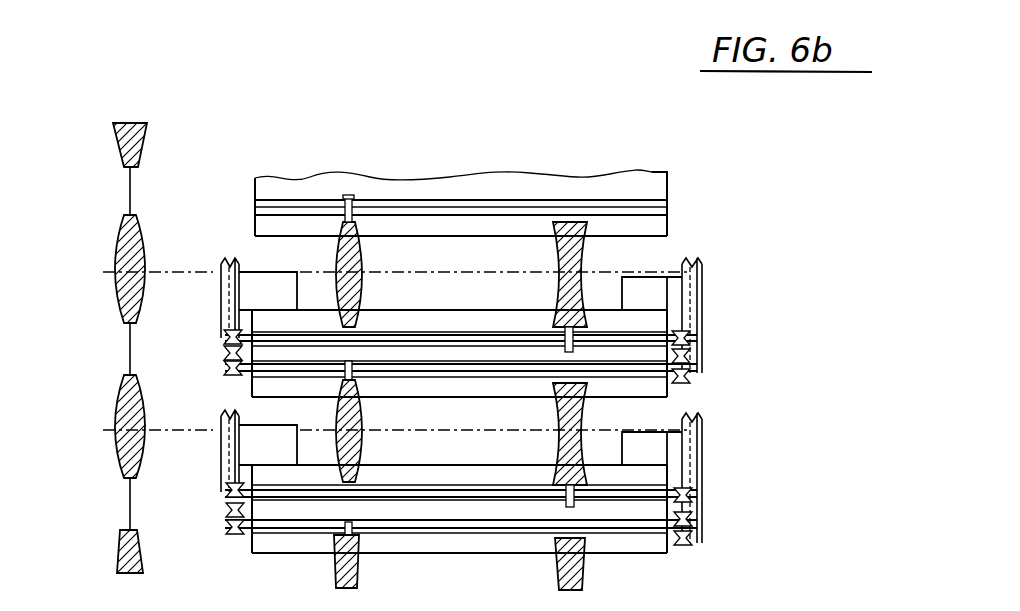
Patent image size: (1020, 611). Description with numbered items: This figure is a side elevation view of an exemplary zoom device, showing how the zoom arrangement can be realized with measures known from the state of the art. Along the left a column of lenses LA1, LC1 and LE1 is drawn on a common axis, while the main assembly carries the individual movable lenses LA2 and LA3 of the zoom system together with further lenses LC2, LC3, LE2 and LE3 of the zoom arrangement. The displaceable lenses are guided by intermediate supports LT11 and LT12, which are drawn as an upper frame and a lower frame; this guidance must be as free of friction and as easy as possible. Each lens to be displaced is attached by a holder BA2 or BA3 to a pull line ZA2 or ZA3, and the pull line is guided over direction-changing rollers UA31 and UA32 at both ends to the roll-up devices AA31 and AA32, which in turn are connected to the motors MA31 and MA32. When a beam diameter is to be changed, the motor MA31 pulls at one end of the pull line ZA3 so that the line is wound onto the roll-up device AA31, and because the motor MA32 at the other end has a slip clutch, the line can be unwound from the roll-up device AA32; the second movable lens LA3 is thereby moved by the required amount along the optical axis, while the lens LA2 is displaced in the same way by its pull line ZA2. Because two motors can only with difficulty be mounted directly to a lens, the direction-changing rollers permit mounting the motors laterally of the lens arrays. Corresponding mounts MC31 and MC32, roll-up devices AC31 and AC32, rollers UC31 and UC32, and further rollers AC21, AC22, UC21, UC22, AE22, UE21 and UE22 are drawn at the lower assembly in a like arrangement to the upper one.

The first lens of group A LA1 is at (121, 234).
The first lens of group C LC1 is at (118, 412).
The first lens (wedge) of group E LE1 is at (121, 536).
The lens LA2 is at (340, 222).
The second movable lens LA3 is at (572, 216).
The second lens of group C LC2 is at (358, 415).
The third lens of group C LC3 is at (567, 423).
The second lens (wedge) of group E LE2 is at (357, 565).
The third lens (wedge) of group E LE3 is at (562, 573).
The holder pin of lens LA2 BA2 is at (352, 202).
The holder pin of lens LA3 BA3 is at (570, 343).
The intermediate support LT11 is at (503, 178).
The intermediate support LT12 is at (407, 318).
The pull line ZA2 is at (643, 200).
The pull line ZA3 is at (610, 343).
The motor MA32 is at (249, 280).
The motor MA31 is at (662, 282).
The mount block C32 MC32 is at (255, 437).
The mount block C31 MC31 is at (662, 438).
The roll-up device AA32 is at (219, 277).
The roll-up device AA31 is at (700, 276).
The drive pulley C32 AC32 is at (222, 474).
The drive pulley C31 AC31 is at (698, 478).
The direction-changing roller UA32 is at (240, 332).
The direction-changing roller UA31 is at (688, 333).
The drive roller C22 AC22 is at (221, 351).
The drive roller C21 AC21 is at (700, 357).
The guide roller C22 UC22 is at (233, 378).
The guide roller C21 UC21 is at (690, 393).
The guide roller C32 UC32 is at (250, 508).
The guide roller C31 UC31 is at (682, 512).
The drive roller E22 AE22 is at (222, 508).
The guide roller E22 UE22 is at (233, 538).
The guide roller E21 UE21 is at (690, 542).